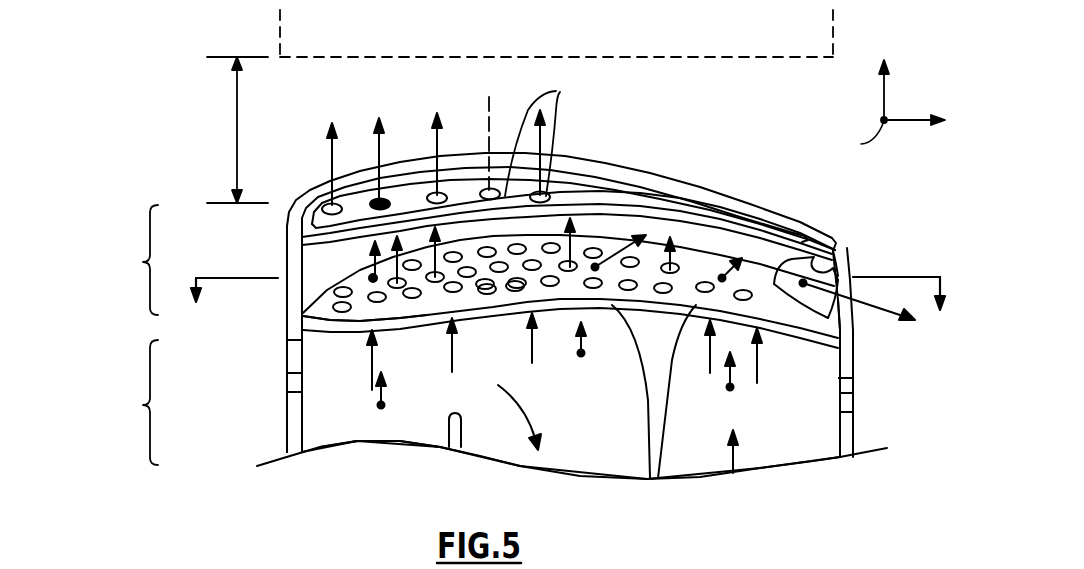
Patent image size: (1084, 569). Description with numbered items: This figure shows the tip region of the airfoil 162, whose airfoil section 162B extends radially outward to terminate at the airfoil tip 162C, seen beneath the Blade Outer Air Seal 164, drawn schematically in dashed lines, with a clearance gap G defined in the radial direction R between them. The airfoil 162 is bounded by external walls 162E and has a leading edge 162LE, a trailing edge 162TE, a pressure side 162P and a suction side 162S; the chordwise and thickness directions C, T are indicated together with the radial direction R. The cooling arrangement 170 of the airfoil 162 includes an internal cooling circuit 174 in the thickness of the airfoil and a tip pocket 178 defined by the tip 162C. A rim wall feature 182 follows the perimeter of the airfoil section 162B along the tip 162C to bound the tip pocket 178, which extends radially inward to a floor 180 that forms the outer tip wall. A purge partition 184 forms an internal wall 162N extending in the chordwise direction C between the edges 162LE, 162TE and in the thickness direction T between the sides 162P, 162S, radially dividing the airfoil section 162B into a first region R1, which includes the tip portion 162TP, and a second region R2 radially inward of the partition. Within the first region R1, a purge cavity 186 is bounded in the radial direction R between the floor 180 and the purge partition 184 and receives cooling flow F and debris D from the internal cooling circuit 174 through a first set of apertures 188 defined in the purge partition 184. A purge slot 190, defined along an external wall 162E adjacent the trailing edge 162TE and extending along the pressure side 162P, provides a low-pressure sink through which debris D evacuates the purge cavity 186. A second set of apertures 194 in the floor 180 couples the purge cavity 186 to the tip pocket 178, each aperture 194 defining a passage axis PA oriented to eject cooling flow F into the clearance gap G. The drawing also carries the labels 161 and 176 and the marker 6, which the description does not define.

The airfoil 161 is at (172, 54).
The airfoil 162 is at (559, 335).
The Blade Outer Air Seal (BOAS) 164 is at (778, 57).
The cooling arrangement 170 is at (155, 132).
The internal cooling circuit 174 is at (357, 442).
The rib 176 is at (287, 387).
The tip pocket 178 is at (322, 204).
The tip floor 180 is at (355, 200).
The rim wall feature 182 is at (464, 157).
The purge partition 184 is at (354, 322).
The purge cavity 186 is at (303, 266).
The first set of apertures 188 is at (515, 290).
The purge slot 190 is at (838, 276).
The second set of apertures 194 is at (556, 91).
The airfoil tip 162C is at (584, 148).
The suction side 162S is at (652, 178).
The pressure side 162P is at (838, 276).
The tip portion 162TP is at (276, 314).
The leading edge 162LE is at (287, 360).
The trailing edge 162TE is at (853, 388).
The external wall 162E is at (296, 420).
The airfoil section 162B is at (268, 448).
The internal wall 162N is at (652, 463).
The clearance gap G is at (237, 140).
The cooling air flow F is at (437, 140).
The debris D is at (392, 205).
The passage axis PA is at (494, 103).
The radial direction R is at (883, 73).
The chordwise direction C is at (923, 121).
The thickness direction T is at (864, 140).
The first region R1 is at (143, 262).
The second region R2 is at (143, 405).
The section line 6 is at (568, 273).